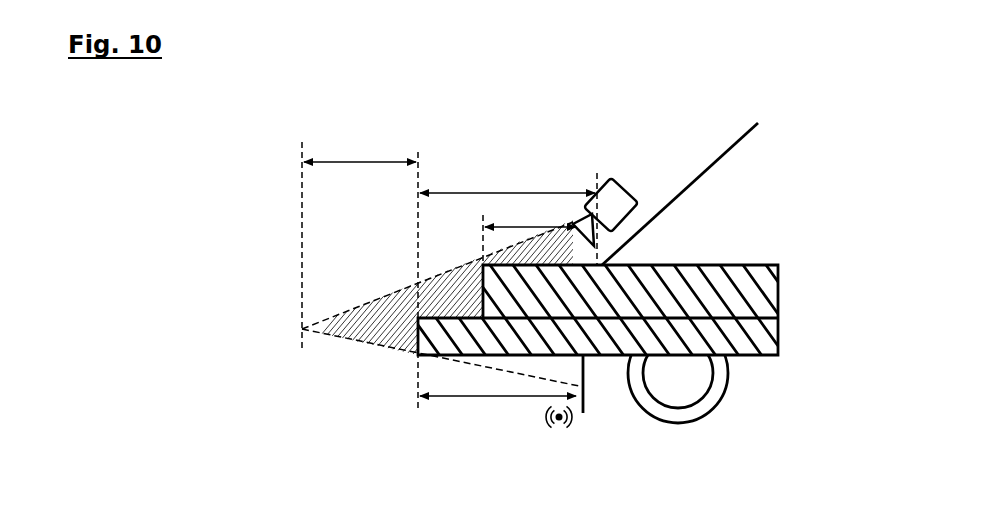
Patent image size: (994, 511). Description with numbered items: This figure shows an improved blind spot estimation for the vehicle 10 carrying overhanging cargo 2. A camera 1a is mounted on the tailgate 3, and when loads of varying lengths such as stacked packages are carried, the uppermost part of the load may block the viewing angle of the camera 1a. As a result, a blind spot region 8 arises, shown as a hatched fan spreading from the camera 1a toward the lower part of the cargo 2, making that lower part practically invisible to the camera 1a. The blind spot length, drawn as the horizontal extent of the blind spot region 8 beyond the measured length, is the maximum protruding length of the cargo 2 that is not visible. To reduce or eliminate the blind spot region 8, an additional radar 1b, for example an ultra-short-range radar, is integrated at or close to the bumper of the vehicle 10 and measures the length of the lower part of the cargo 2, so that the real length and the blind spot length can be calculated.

The vehicle 10 is at (159, 183).
The camera 1a is at (621, 179).
The radar 1b is at (584, 413).
The cargo 2 is at (694, 264).
The tailgate 3 is at (701, 173).
The blind spot region 8 is at (376, 311).